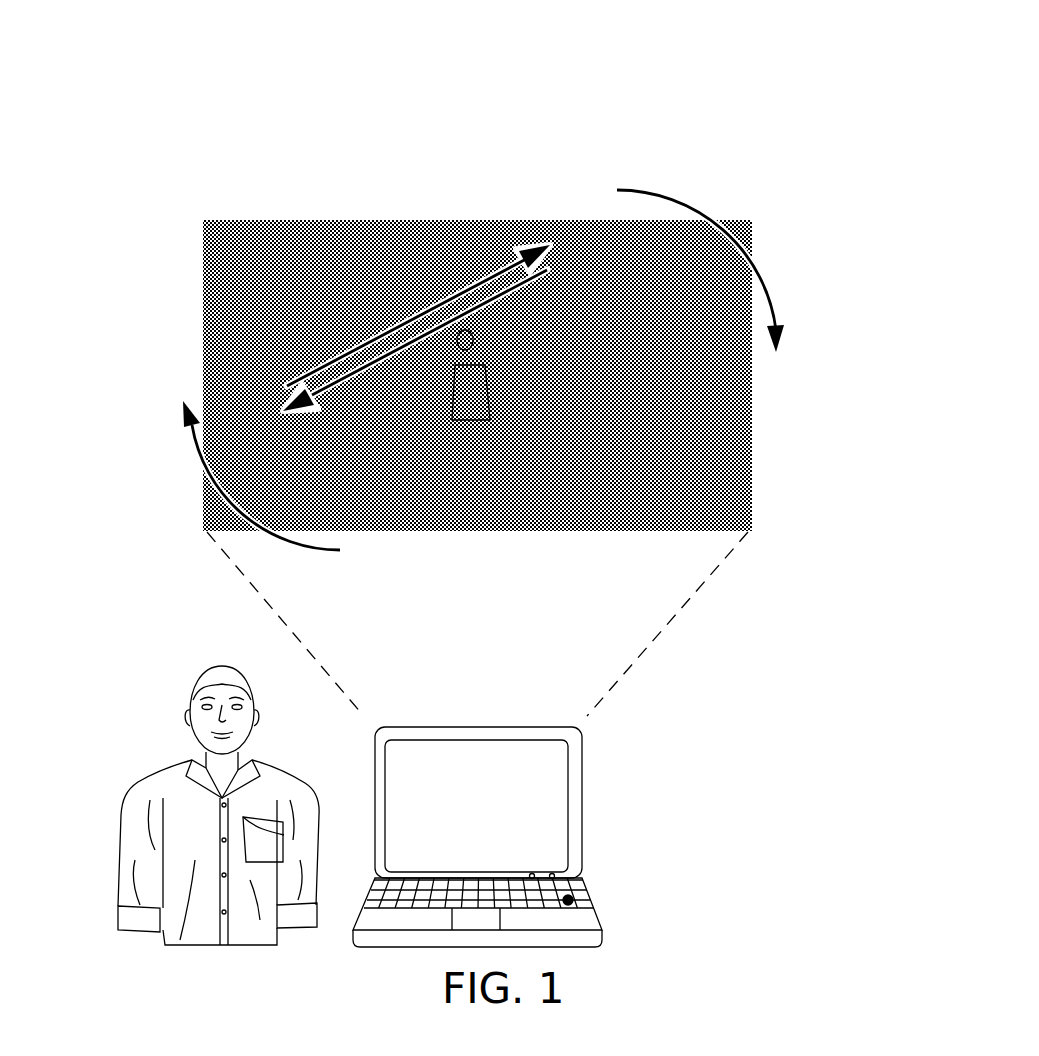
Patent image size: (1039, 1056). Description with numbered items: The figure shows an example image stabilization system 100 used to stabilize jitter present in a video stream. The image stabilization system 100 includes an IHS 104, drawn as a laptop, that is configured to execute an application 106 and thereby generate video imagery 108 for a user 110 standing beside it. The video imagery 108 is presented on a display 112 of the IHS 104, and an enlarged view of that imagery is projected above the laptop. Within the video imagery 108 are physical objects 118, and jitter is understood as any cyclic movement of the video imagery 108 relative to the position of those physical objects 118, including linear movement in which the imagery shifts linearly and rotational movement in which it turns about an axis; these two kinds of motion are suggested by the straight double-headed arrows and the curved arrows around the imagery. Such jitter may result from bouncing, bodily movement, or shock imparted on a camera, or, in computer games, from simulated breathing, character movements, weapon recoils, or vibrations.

The image stabilization system 100 is at (600, 96).
The IHS 104 is at (476, 727).
The application 106 is at (573, 897).
The video imagery 108 is at (500, 220).
The user 110 is at (127, 851).
The display 112 is at (500, 822).
The physical objects 118 is at (478, 378).